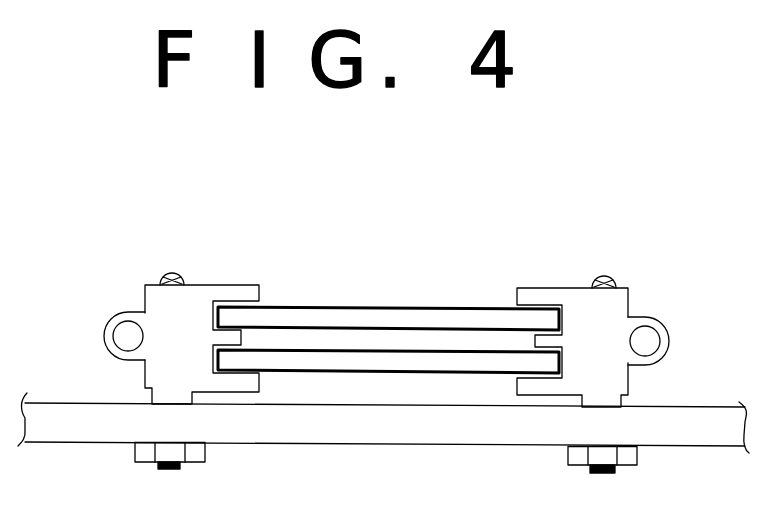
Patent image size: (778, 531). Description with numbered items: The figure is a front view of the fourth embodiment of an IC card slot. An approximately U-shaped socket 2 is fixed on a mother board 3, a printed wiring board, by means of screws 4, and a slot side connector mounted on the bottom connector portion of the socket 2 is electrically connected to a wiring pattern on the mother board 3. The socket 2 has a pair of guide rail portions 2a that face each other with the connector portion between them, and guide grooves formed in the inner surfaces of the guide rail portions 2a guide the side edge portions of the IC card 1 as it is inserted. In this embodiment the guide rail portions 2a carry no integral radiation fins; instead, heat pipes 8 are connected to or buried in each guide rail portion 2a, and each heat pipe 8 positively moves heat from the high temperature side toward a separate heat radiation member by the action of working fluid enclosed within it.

The IC card 1 is at (328, 307).
The socket 2 is at (208, 262).
The guide rail portion 2a is at (153, 302).
The mother board 3 is at (355, 445).
The screw 4 is at (171, 274).
The heat pipe 8 is at (114, 335).